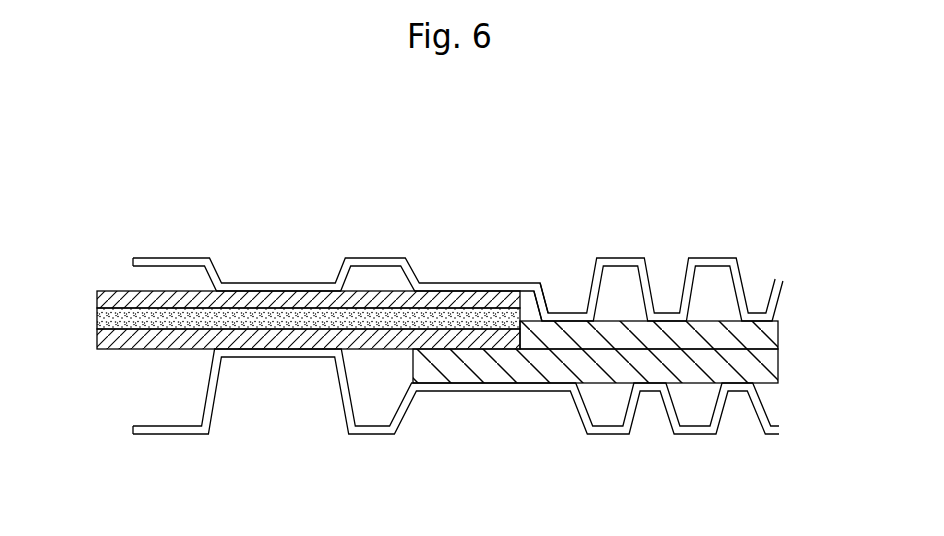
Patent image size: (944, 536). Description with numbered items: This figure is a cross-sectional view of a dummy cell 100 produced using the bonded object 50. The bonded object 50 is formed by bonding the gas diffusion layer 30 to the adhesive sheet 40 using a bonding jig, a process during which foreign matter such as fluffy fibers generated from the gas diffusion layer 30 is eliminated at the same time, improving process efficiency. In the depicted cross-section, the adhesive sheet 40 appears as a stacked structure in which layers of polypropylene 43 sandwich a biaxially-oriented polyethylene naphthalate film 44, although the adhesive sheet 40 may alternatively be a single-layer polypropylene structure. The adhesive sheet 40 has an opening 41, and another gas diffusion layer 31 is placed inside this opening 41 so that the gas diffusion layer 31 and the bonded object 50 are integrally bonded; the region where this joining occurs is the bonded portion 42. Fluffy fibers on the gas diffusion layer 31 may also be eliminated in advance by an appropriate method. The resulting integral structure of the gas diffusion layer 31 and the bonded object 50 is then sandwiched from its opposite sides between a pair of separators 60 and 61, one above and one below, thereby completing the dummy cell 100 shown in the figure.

The dummy cell 100 is at (193, 160).
The adhesive sheet 40 is at (43, 283).
The layers of polypropylene 43 is at (99, 296).
The biaxially-oriented polyethylene naphthalate (PEN) film 44 is at (99, 318).
The opening 41 is at (536, 302).
The bonded portion 42 is at (492, 352).
The gas diffusion layer 31 is at (777, 336).
The gas diffusion layer 30 is at (780, 368).
The bonded object 50 is at (633, 358).
The separator 60 is at (611, 434).
The separator 61 is at (618, 257).